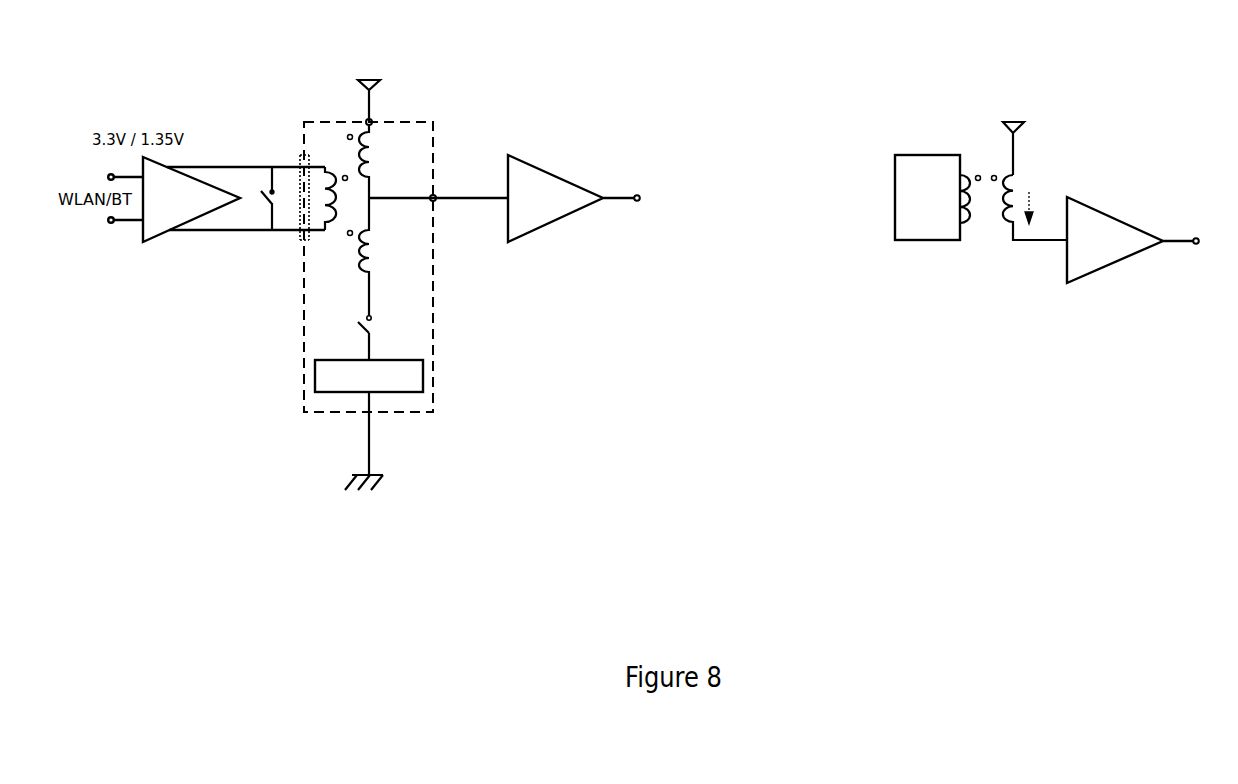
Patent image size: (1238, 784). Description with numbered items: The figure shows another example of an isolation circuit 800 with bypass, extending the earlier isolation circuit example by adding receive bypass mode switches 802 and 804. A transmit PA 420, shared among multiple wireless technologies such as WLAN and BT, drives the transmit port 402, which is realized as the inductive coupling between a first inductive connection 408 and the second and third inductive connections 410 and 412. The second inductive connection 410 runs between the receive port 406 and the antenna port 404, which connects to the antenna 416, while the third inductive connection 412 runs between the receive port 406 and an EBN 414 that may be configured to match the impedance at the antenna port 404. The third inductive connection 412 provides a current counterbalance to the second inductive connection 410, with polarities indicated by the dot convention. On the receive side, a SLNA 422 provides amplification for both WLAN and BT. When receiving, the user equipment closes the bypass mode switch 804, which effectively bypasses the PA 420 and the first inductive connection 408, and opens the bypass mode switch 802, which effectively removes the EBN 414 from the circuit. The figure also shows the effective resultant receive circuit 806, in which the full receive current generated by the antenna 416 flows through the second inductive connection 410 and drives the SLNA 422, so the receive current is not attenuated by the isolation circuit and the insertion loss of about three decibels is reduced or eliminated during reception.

The antenna 416 is at (368, 80).
The antenna port 404 is at (368, 122).
The transmit port 402 is at (303, 153).
The isolation circuit 800 is at (419, 146).
The receive port 406 is at (435, 198).
The bypass mode switch 804 is at (267, 204).
The transmit PA 420 is at (155, 233).
The first inductive connection 408 is at (330, 226).
The third inductive connection 412 is at (365, 246).
The bypass mode switch 802 is at (374, 331).
The EBN 414 is at (408, 386).
The SLNA 422 is at (526, 230).
The second inductive connection 410 is at (1010, 205).
The effective resultant receive circuit 806 is at (932, 285).